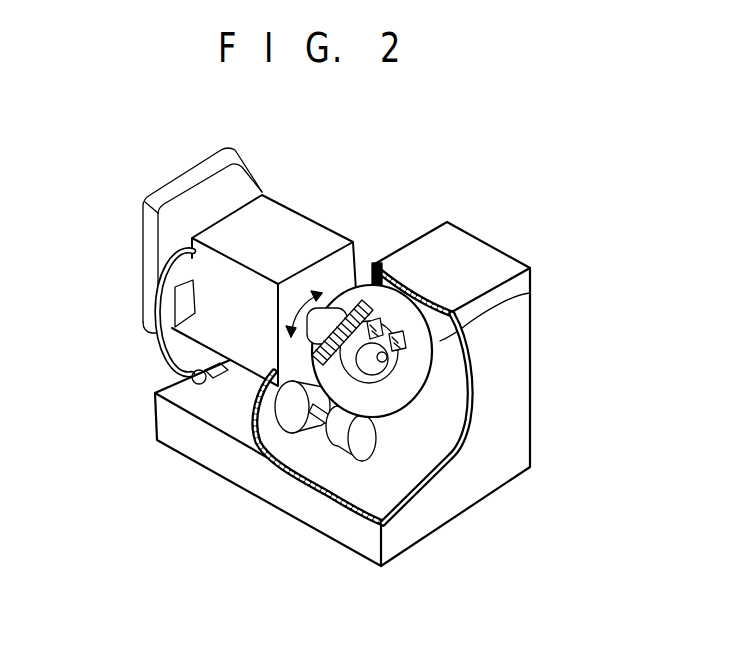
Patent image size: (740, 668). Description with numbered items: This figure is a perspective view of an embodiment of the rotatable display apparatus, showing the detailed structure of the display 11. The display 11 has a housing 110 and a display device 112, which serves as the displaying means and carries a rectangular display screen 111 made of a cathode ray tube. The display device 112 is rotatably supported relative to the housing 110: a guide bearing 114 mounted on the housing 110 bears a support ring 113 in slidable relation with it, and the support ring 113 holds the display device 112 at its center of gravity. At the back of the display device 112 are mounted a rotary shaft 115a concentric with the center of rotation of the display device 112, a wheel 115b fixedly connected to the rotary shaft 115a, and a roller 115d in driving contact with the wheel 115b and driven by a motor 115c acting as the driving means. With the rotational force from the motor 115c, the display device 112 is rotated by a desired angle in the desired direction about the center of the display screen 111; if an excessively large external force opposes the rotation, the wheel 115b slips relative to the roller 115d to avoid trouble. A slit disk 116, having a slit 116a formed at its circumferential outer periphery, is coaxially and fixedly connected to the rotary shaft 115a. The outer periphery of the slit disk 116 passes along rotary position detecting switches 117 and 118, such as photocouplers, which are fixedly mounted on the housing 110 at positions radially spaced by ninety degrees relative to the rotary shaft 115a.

The display 11 is at (561, 145).
The housing 110 is at (373, 394).
The display screen 111 is at (153, 240).
The display device 112 is at (264, 260).
The support ring 113 is at (114, 314).
The guide bearing 114 is at (174, 434).
The rotary shaft 115a is at (336, 263).
The wheel 115b is at (372, 273).
The motor 115c is at (269, 468).
The roller 115d is at (343, 427).
The slit disk 116 is at (461, 428).
The slit 116a is at (462, 279).
The rotary position detecting switch 117 is at (399, 272).
The rotary position detecting switch 118 is at (515, 306).